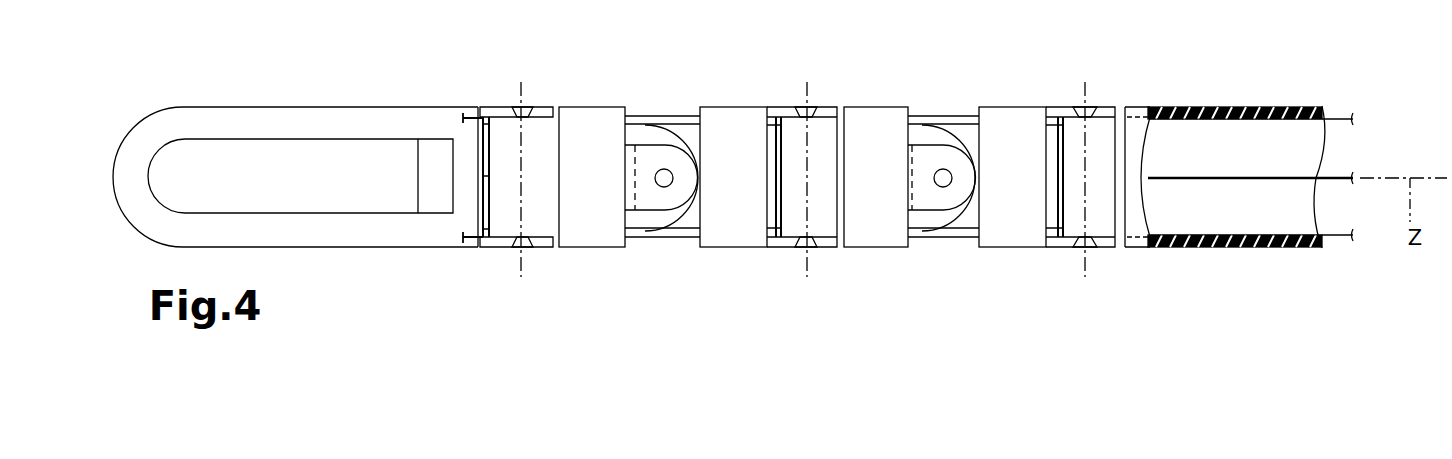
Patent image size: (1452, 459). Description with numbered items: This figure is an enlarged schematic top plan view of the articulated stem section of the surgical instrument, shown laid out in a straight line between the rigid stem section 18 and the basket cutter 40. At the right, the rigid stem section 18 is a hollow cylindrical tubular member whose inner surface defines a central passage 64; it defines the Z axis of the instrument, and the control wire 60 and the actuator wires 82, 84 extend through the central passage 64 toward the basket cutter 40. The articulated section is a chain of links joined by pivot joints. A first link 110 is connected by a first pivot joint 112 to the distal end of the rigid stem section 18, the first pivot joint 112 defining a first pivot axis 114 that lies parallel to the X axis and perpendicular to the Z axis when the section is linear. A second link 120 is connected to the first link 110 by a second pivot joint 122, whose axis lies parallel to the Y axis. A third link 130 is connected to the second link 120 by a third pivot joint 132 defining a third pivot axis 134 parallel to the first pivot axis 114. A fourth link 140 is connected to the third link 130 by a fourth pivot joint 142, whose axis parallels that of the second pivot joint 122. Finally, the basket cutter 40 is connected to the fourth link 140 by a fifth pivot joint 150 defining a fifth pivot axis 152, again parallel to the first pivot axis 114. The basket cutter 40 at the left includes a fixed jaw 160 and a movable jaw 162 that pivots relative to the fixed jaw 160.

The rigid stem section 18 is at (1206, 102).
The basket cutter 40 is at (360, 70).
The control wire 60 is at (1341, 177).
The central passage 64 is at (1196, 220).
The actuator wire 82 is at (474, 247).
The actuator wire 84 is at (476, 106).
The first link 110 is at (1010, 107).
The first pivot joint 112 is at (1078, 107).
The first pivot axis 114 is at (1085, 277).
The second link 120 is at (886, 107).
The second pivot joint 122 is at (945, 183).
The third link 130 is at (740, 107).
The third pivot joint 132 is at (810, 107).
The third pivot axis 134 is at (807, 277).
The fourth link 140 is at (586, 107).
The fourth pivot joint 142 is at (667, 183).
The fifth pivot joint 150 is at (520, 106).
The fifth pivot axis 152 is at (522, 264).
The fixed jaw 160 is at (160, 102).
The movable jaw 162 is at (271, 136).